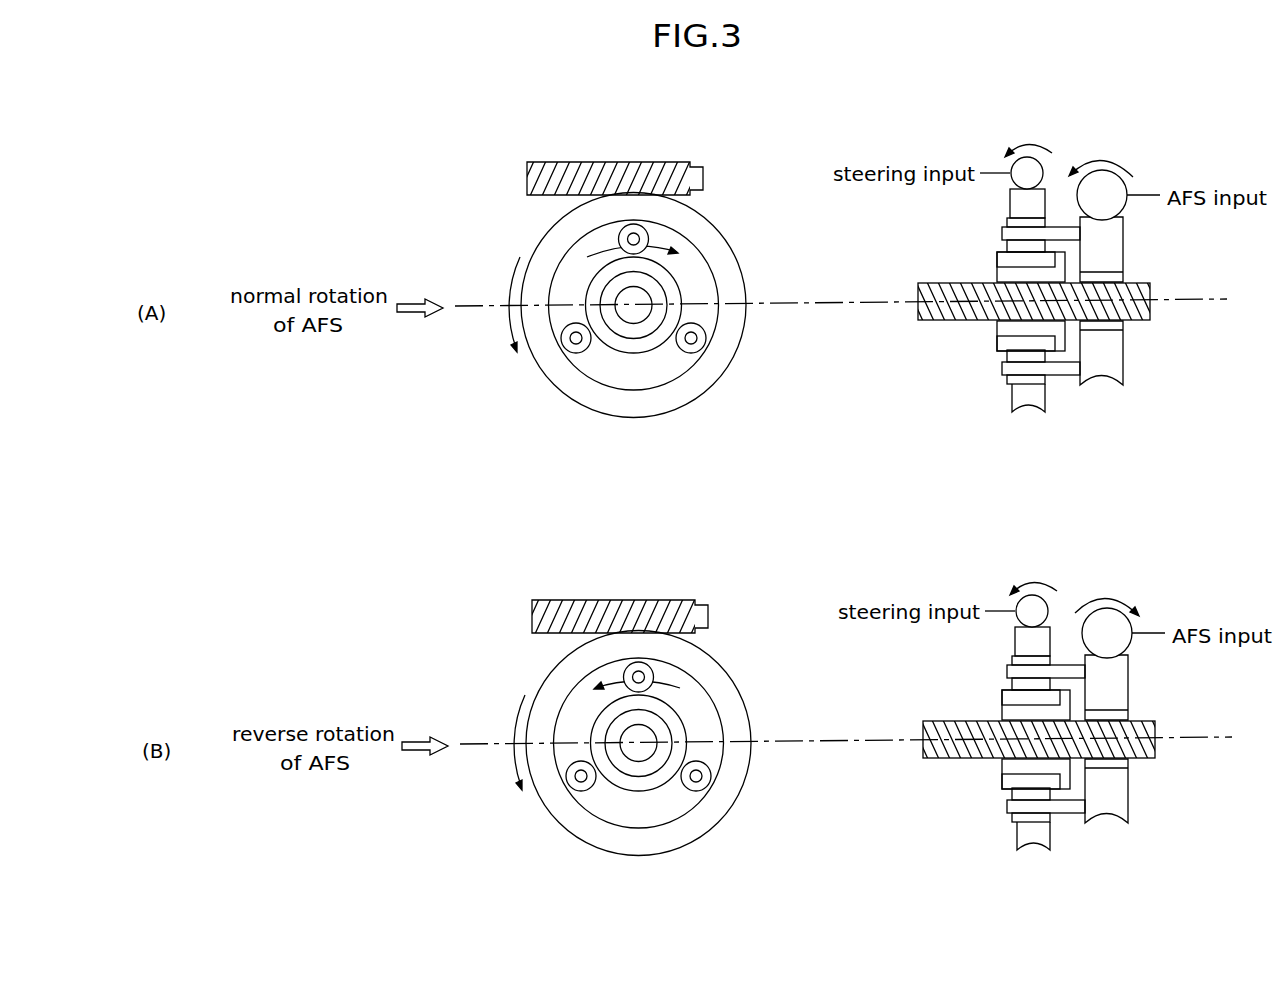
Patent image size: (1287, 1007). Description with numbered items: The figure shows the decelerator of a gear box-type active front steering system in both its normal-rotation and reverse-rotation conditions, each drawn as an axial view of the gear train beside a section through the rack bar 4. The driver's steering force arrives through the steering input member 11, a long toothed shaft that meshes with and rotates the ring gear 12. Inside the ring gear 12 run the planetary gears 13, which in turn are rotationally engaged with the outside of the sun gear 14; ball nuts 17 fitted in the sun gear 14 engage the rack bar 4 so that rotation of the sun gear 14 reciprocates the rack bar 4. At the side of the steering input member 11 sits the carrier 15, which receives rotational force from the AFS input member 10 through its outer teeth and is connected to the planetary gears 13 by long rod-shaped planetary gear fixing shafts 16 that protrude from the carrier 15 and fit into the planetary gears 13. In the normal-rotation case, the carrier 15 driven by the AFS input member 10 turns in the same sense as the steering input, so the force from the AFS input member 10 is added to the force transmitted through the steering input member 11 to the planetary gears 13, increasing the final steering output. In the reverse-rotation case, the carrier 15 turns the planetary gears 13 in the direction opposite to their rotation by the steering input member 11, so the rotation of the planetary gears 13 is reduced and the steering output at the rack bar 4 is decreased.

The rack bar 4 is at (632, 316).
The AFS input member 10 is at (541, 162).
The steering input member 11 is at (1040, 168).
The ring gear 12 is at (690, 388).
The planetary gears 13 is at (645, 230).
The sun gear 14 is at (650, 345).
The carrier 15 is at (1115, 247).
The planetary gear fixing shafts 16 is at (560, 338).
The ball nuts 17 is at (652, 290).